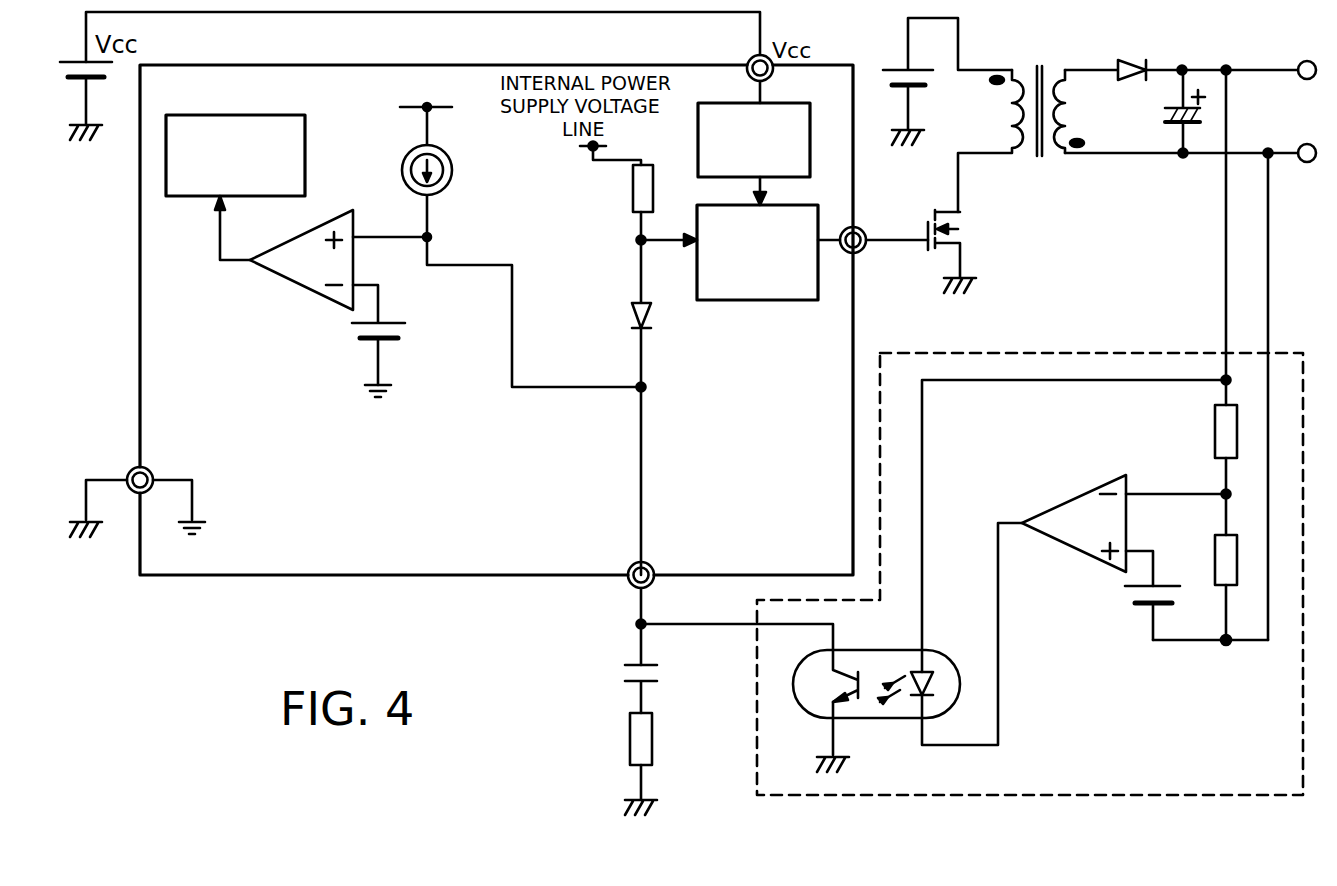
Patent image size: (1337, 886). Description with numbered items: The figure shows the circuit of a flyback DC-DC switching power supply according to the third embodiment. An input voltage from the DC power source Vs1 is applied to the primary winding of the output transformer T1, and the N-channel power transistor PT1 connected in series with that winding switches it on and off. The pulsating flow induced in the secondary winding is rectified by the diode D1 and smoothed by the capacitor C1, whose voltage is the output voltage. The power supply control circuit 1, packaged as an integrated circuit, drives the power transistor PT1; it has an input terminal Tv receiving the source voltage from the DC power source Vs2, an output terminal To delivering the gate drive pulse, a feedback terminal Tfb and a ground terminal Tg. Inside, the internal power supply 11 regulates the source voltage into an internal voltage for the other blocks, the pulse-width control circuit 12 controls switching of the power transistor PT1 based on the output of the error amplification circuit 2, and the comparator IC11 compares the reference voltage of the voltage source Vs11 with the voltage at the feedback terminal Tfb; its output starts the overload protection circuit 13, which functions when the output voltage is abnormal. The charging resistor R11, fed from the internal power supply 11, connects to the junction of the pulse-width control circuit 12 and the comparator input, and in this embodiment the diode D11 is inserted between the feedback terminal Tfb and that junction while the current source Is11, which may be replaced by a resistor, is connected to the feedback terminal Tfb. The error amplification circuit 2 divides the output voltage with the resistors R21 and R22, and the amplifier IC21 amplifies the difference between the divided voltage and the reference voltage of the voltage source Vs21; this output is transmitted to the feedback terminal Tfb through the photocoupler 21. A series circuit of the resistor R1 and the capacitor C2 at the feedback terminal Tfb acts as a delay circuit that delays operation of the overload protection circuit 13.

The power supply control circuit 1 is at (458, 47).
The error amplification circuit 2 is at (1025, 352).
The internal power supply 11 is at (788, 100).
The pulse-width control circuit 12 is at (805, 203).
The overload protection circuit 13 is at (228, 113).
The photocoupler 21 is at (850, 648).
The output transformer T1 is at (1040, 62).
The diode D1 is at (1130, 60).
The capacitor C1 is at (1164, 110).
The power transistor PT1 is at (963, 227).
The resistor R21 is at (1213, 430).
The resistor R22 is at (1214, 557).
The amplifier IC21 is at (1078, 494).
The voltage source Vs21 is at (1130, 598).
The charging resistor R11 is at (631, 183).
The diode D11 is at (631, 313).
The comparator IC11 is at (296, 293).
The voltage source Vs11 is at (404, 331).
The current source Is11 is at (406, 156).
The capacitor C2 is at (660, 677).
The resistor R1 is at (655, 741).
The DC power source Vs2 is at (103, 86).
The DC power source Vs1 is at (895, 62).
The input terminal Tv is at (750, 60).
The output terminal To is at (862, 251).
The ground terminal Tg is at (152, 470).
The feedback terminal Tfb is at (653, 567).